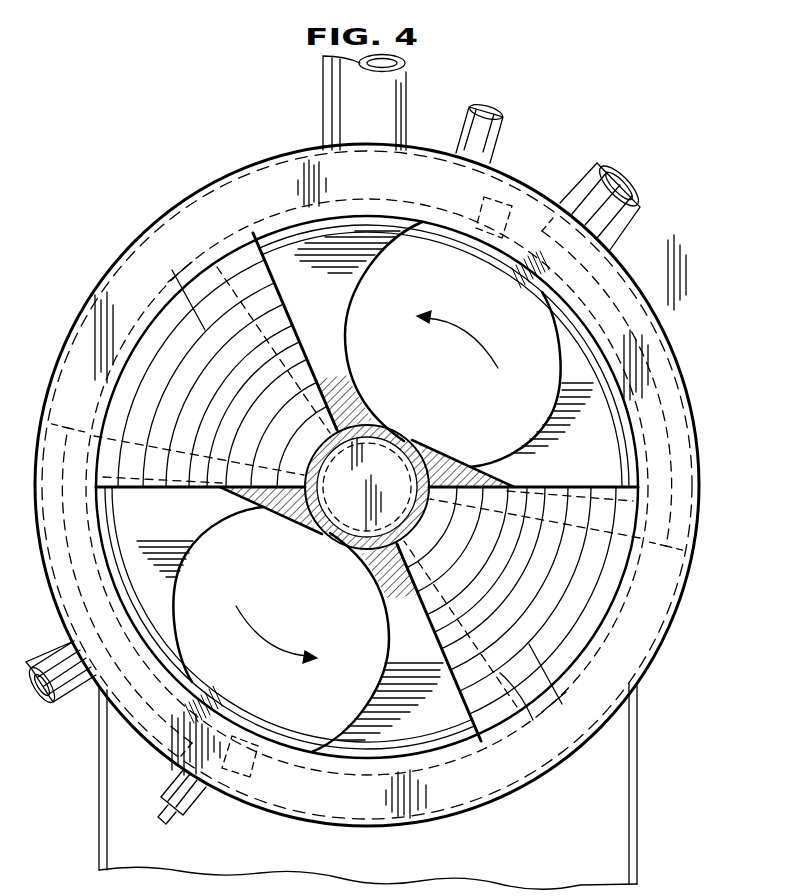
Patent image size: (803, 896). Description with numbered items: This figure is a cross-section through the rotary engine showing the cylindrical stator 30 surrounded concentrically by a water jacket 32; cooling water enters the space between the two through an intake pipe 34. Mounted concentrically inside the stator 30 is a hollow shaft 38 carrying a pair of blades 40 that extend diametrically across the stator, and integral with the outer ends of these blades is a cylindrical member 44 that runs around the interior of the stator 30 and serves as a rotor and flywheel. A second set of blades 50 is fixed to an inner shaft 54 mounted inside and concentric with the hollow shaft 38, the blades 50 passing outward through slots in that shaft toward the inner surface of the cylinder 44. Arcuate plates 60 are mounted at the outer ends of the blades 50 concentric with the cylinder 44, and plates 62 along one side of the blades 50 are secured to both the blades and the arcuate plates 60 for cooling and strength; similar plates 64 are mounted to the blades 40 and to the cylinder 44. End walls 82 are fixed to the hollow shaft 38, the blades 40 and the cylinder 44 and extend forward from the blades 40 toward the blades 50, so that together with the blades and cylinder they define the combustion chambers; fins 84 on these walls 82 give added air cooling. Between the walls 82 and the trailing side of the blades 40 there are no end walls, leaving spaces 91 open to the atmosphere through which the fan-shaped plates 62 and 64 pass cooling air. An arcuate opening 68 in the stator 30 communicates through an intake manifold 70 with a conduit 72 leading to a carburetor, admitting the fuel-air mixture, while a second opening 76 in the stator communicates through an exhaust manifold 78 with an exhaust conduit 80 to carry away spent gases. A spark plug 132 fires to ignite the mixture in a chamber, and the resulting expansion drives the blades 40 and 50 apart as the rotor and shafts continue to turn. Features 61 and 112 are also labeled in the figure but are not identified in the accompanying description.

The cylindrical stator 30 is at (668, 385).
The water jacket 32 is at (650, 312).
The intake pipe 34 is at (490, 128).
The hollow shaft 38 is at (322, 538).
The blades 40 is at (325, 365).
The cylindrical member 44 is at (403, 222).
The blades 50 is at (440, 467).
The shaft 54 is at (427, 523).
The arcuate plates 60 is at (527, 275).
The seal strip 61 is at (518, 261).
The plates 62 is at (553, 408).
The plates 64 is at (347, 300).
The arcuate opening 68 is at (367, 487).
The intake manifold 70 is at (500, 172).
The conduit 72 is at (385, 92).
The opening 76 is at (607, 340).
The exhaust manifold 78 is at (680, 540).
The exhaust conduit 80 is at (607, 223).
The walls 82 is at (138, 422).
The fins 84 is at (351, 496).
The spaces 91 is at (367, 487).
The support base 112 is at (627, 830).
The spark plug 132 is at (183, 807).